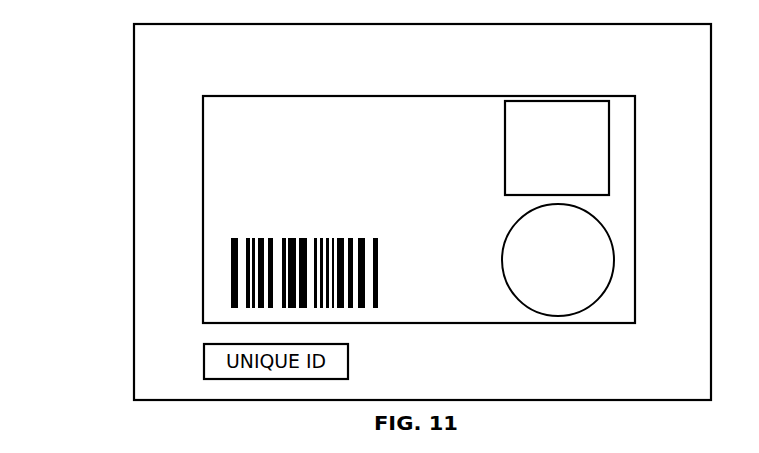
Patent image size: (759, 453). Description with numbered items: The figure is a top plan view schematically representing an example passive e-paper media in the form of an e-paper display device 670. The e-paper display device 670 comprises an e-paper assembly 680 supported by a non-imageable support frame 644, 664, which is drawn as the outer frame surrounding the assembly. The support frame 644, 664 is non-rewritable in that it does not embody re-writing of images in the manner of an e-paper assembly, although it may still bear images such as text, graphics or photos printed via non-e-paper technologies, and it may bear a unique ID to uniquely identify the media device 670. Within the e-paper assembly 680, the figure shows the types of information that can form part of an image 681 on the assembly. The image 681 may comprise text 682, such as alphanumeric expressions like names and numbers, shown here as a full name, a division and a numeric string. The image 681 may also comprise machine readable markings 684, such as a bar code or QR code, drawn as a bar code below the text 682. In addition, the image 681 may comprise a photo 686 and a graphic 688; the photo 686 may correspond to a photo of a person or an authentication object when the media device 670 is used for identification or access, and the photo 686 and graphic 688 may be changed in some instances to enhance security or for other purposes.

The e-paper display device 670 is at (134, 44).
The support frame 644 is at (647, 66).
The support frame 664 is at (422, 212).
The e-paper assembly 680 is at (203, 115).
The image 681 is at (427, 191).
The text 682 is at (247, 165).
The machine readable markings 684 is at (230, 271).
The photo 686 is at (609, 147).
The graphic 688 is at (615, 257).